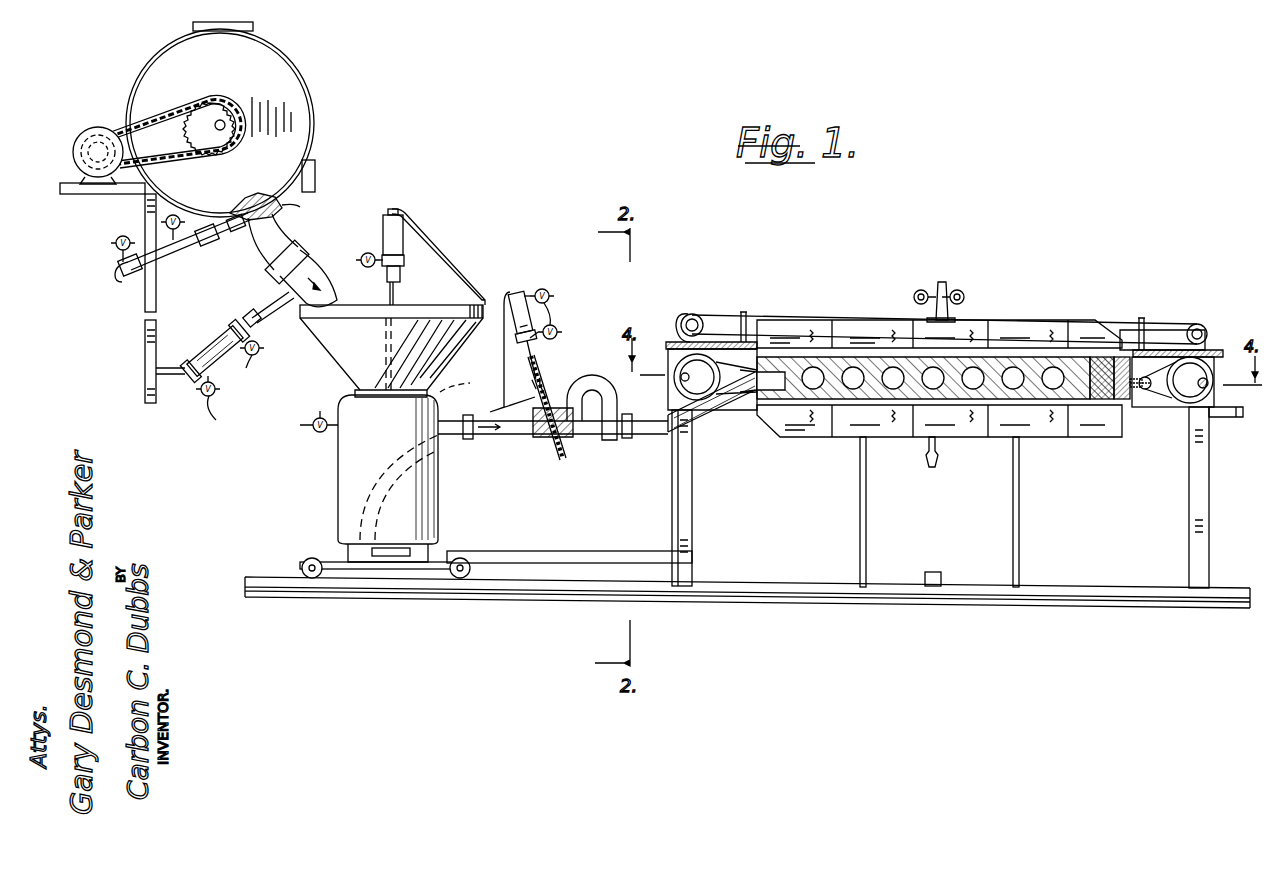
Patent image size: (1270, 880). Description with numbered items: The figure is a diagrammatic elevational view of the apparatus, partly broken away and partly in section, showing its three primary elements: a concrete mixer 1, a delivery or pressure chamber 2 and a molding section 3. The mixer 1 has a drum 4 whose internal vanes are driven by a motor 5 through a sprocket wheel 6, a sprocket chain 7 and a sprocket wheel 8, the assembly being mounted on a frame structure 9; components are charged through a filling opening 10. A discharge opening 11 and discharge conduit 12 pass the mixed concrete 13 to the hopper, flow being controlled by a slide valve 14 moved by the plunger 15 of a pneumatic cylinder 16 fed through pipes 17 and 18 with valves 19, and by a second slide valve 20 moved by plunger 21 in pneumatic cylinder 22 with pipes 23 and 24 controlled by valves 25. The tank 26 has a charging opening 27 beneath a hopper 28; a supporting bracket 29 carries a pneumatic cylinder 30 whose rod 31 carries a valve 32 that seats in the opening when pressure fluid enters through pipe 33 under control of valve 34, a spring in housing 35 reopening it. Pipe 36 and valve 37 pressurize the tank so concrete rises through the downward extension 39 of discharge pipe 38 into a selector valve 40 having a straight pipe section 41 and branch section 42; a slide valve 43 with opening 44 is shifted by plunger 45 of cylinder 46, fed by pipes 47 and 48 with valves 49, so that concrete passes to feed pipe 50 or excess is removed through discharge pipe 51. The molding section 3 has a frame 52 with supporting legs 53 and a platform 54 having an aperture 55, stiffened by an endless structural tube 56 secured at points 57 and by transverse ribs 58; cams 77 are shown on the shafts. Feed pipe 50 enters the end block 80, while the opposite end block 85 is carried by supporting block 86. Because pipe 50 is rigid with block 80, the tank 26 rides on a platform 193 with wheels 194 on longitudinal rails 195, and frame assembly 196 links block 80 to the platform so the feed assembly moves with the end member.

The concrete mixer 1 is at (322, 110).
The delivery or pressure chamber 2 is at (468, 250).
The molding section 3 is at (980, 276).
The drum 4 is at (300, 76).
The motor 5 is at (82, 130).
The sprocket wheel 6 is at (108, 128).
The sprocket chain 7 is at (152, 118).
The sprocket wheel 8 is at (215, 140).
The frame structure 9 is at (145, 213).
The filling opening 10 is at (195, 30).
The discharge opening 11 is at (300, 207).
The discharge conduit 12 is at (250, 262).
The mixed concrete 13 is at (262, 193).
The slide valve 14 is at (198, 232).
The plunger 15 is at (195, 258).
The pneumatic cylinder 16 is at (168, 270).
The pipe 17 is at (115, 270).
The pipe 18 is at (178, 220).
The valves 19 is at (116, 243).
The second slide valve 20 is at (290, 302).
The plunger 21 is at (245, 321).
The pneumatic cylinder 22 is at (212, 343).
The pipe 23 is at (216, 420).
The pipe 24 is at (262, 352).
The valves 25 is at (218, 386).
The tank 26 is at (338, 466).
The charging opening 27 is at (455, 381).
The hopper 28 is at (335, 352).
The supporting bracket 29 is at (430, 245).
The pneumatic cylinder 30 is at (383, 232).
The rod 31 is at (393, 298).
The valve 32 is at (445, 368).
The pipe 33 is at (366, 252).
The valve 34 is at (366, 267).
The housing 35 is at (400, 270).
The pipe 36 is at (315, 430).
The valve 37 is at (312, 418).
The discharge pipe 38 is at (475, 440).
The downward extension of discharge pipe 39 is at (410, 465).
The selector valve 40 is at (560, 450).
The straight pipe section 41 is at (538, 440).
The branch section 42 is at (504, 405).
The slide valve 43 is at (545, 382).
The opening 44 is at (565, 445).
The plunger 45 is at (545, 358).
The fluid pressure cylinder 46 is at (508, 296).
The pipe 47 is at (549, 294).
The pipe 48 is at (557, 333).
The valves 49 is at (550, 314).
The pipe 50 is at (648, 440).
The discharge pipe 51 is at (605, 392).
The frame 52 is at (1212, 347).
The supporting legs 53 is at (692, 478).
The platform or top portion 54 is at (1170, 348).
The aperture or opening 55 is at (740, 362).
The endless structural tube 56 is at (714, 316).
The securing points of tube 57 is at (682, 316).
The transverse ribs 58 is at (742, 312).
The cams 77 is at (1178, 398).
The block 80 is at (750, 372).
The block 85 is at (1098, 357).
The supporting block 86 is at (1122, 357).
The platform 193 is at (345, 562).
The wheels 194 is at (275, 577).
The longitudinal rails 195 is at (545, 578).
The frame assembly 196 is at (675, 528).